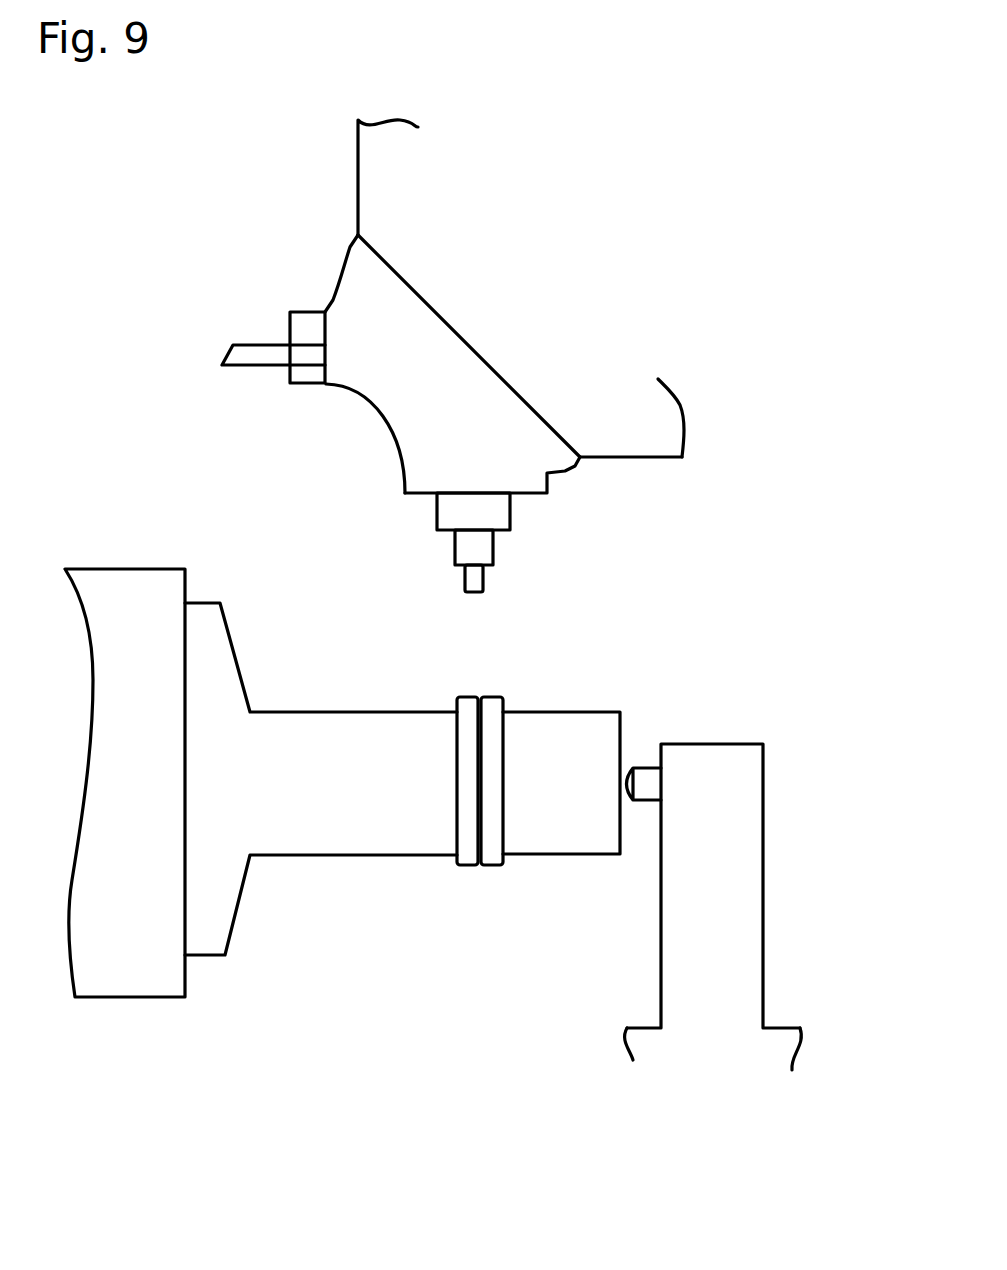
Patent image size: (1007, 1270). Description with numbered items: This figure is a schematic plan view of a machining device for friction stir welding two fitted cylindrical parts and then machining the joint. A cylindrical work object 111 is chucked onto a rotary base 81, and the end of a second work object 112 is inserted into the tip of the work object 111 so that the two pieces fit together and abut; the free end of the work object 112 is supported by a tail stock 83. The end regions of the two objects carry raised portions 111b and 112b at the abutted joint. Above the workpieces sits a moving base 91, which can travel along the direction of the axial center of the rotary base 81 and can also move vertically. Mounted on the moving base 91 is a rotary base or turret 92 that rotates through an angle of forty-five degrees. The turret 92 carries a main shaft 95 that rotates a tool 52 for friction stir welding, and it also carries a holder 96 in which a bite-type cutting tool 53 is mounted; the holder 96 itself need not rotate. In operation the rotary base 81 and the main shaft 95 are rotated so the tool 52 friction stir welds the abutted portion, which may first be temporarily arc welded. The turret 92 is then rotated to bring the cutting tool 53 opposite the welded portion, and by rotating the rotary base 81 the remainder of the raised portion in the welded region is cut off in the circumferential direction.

The moving base 91 is at (530, 308).
The rotary base 92 is at (385, 400).
The holder 96 is at (290, 327).
The cutting tool 53 is at (223, 366).
The main shaft 95 is at (440, 510).
The tool 52 is at (493, 562).
The rotary base 81 is at (115, 595).
The work object 111 is at (277, 856).
The raised portion 111b is at (458, 867).
The raised portion 112b is at (490, 866).
The work object 112 is at (585, 855).
The tail stock 83 is at (700, 763).